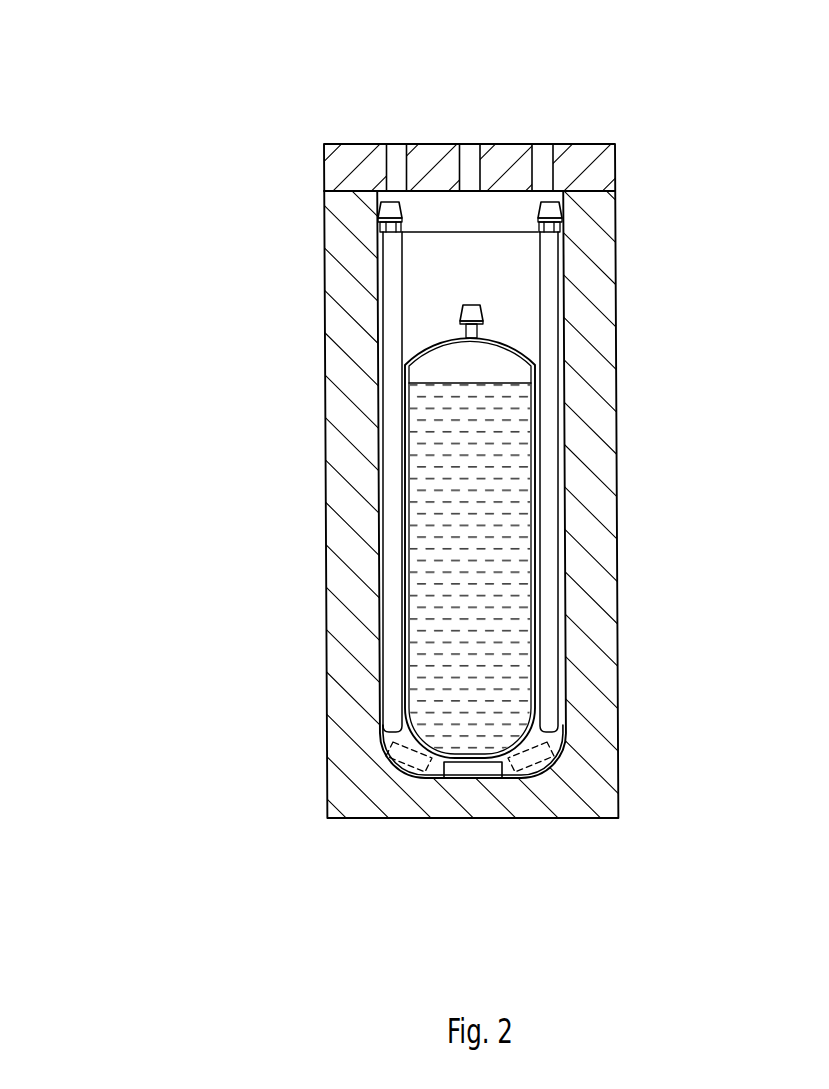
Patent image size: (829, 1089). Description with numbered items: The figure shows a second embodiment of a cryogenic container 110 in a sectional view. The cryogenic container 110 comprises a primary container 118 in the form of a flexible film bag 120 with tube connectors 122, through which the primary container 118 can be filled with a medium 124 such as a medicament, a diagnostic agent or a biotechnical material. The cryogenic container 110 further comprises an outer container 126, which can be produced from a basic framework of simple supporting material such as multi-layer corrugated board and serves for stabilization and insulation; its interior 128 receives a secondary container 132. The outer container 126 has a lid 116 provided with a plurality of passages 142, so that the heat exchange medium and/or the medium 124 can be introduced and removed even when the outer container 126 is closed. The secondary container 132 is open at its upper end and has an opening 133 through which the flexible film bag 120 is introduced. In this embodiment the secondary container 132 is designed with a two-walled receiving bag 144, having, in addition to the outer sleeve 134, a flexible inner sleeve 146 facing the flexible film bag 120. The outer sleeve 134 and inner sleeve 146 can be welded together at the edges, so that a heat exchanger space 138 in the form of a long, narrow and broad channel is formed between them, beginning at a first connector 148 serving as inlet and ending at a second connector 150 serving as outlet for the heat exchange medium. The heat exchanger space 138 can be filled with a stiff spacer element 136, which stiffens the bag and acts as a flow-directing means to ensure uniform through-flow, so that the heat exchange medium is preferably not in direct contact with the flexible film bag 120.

The cryogenic container 110 is at (222, 128).
The lid 116 is at (344, 150).
The outer container 126 is at (357, 75).
The interior 128 is at (433, 212).
The passages 142 is at (547, 158).
The opening 133 is at (473, 230).
The first connector 148 is at (378, 213).
The second connector 150 is at (562, 205).
The secondary container 132 is at (377, 435).
The two-walled receiving bag 144 is at (218, 464).
The outer sleeve 134 is at (385, 409).
The heat exchanger space 138 is at (393, 559).
The inner sleeve 146 is at (402, 490).
The spacer element 136 is at (548, 595).
The primary container 118 is at (413, 352).
The flexible film bag 120 is at (433, 343).
The medium 124 is at (510, 452).
The tube connectors 122 is at (470, 313).